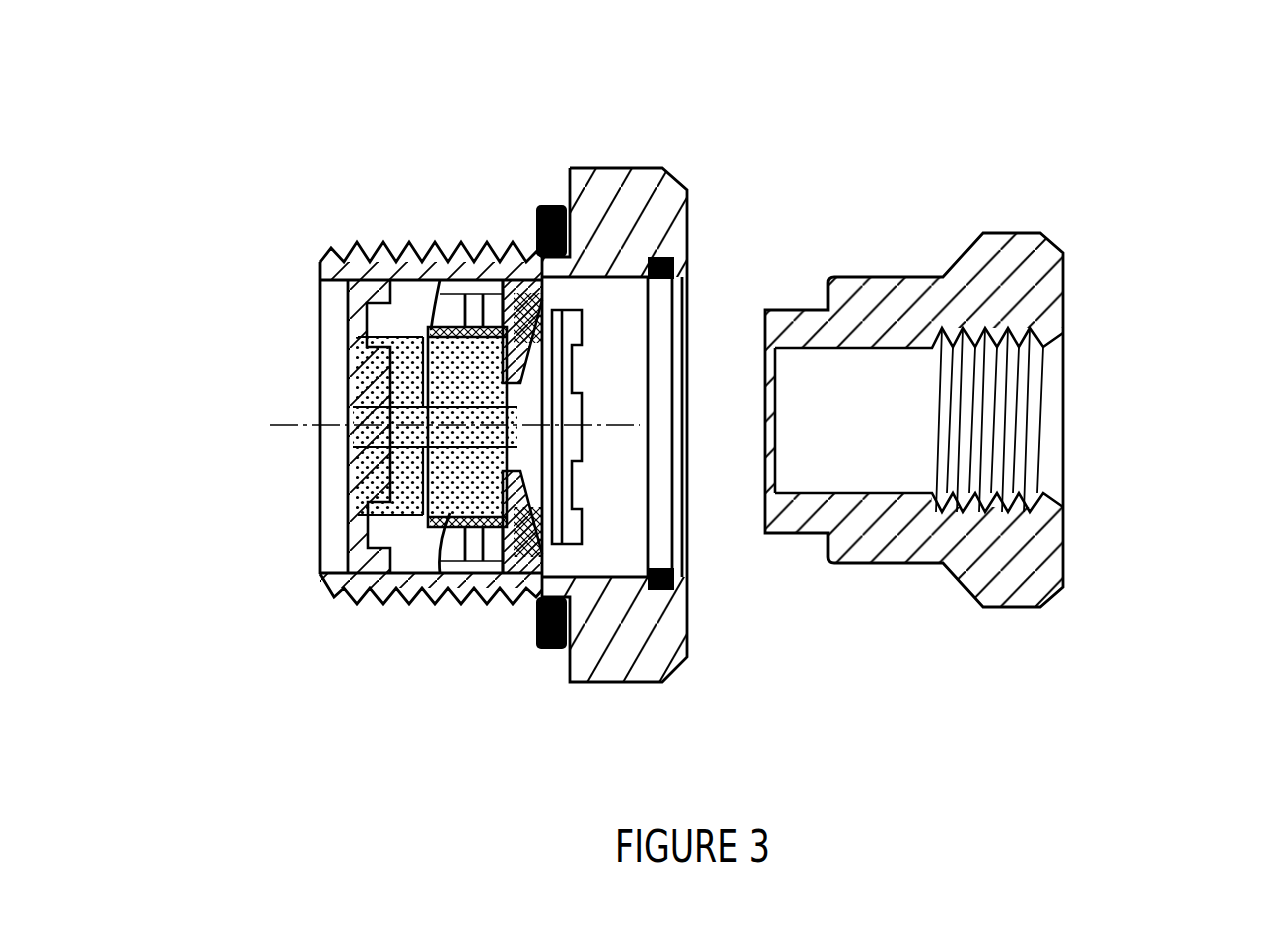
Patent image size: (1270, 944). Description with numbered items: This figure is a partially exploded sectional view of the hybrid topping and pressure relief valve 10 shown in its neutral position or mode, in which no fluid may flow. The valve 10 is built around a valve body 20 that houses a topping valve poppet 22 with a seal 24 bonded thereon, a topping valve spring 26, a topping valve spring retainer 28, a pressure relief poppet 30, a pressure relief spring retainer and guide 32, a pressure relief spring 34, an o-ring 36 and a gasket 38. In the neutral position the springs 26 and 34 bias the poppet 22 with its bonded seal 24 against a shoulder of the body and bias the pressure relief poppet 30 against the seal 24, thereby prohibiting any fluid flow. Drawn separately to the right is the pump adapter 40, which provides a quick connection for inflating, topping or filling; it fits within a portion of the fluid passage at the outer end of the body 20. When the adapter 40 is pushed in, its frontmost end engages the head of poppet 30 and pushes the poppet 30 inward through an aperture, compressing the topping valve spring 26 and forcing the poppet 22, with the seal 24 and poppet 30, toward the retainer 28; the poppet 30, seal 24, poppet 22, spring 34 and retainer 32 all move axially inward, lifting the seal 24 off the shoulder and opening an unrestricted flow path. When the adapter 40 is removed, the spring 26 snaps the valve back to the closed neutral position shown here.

The hybrid topping and pressure relief valve 10 is at (266, 510).
The valve body 20 is at (678, 175).
The topping valve poppet 22 is at (502, 577).
The seal 24 is at (525, 590).
The topping valve spring 26 is at (463, 577).
The topping valve spring retainer 28 is at (425, 587).
The pressure relief poppet 30 is at (578, 545).
The pressure relief spring retainer and guide 32 is at (363, 283).
The pressure relief spring 34 is at (417, 342).
The o-ring 36 is at (668, 258).
The gasket 38 is at (546, 650).
The pump adapter 40 is at (1058, 237).